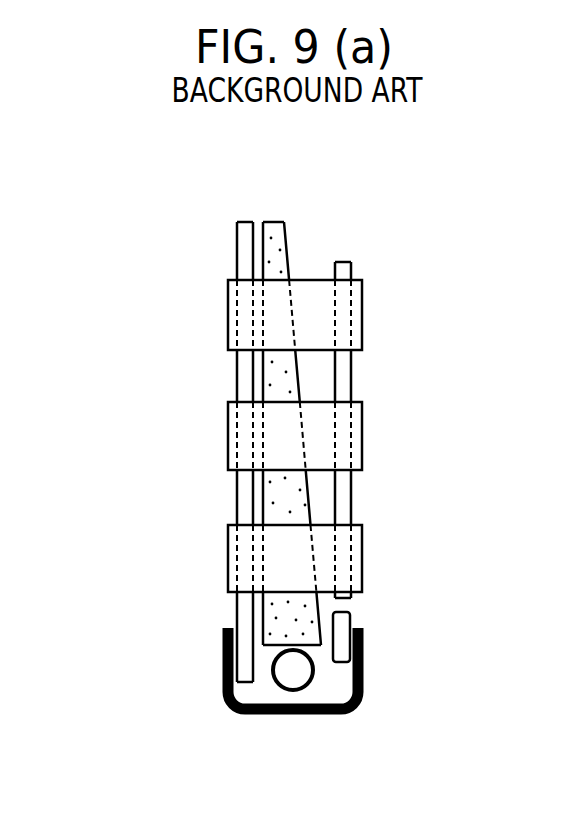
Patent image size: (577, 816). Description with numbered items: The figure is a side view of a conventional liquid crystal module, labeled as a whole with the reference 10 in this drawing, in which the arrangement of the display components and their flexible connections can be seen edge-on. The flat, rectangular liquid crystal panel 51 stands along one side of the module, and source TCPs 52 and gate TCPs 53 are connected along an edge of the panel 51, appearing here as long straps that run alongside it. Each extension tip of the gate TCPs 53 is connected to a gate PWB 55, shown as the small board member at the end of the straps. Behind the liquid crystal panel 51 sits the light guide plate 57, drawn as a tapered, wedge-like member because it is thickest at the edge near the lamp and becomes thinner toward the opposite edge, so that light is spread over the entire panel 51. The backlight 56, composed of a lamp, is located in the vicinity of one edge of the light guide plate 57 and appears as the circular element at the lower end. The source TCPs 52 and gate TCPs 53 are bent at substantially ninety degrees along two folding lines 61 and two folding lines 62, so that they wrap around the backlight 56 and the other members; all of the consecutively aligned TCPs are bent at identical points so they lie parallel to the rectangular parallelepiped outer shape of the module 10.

The pager / electronic device (background art) 10 is at (178, 240).
The liquid crystal panel 51 is at (237, 385).
The source TCPs 52 is at (295, 715).
The gate TCPs 53 is at (230, 548).
The gate PWB 55 is at (348, 262).
The backlight 56 is at (282, 672).
The light guide plate 57 is at (256, 367).
The folding lines 61 is at (228, 697).
The folding lines 62 is at (228, 313).